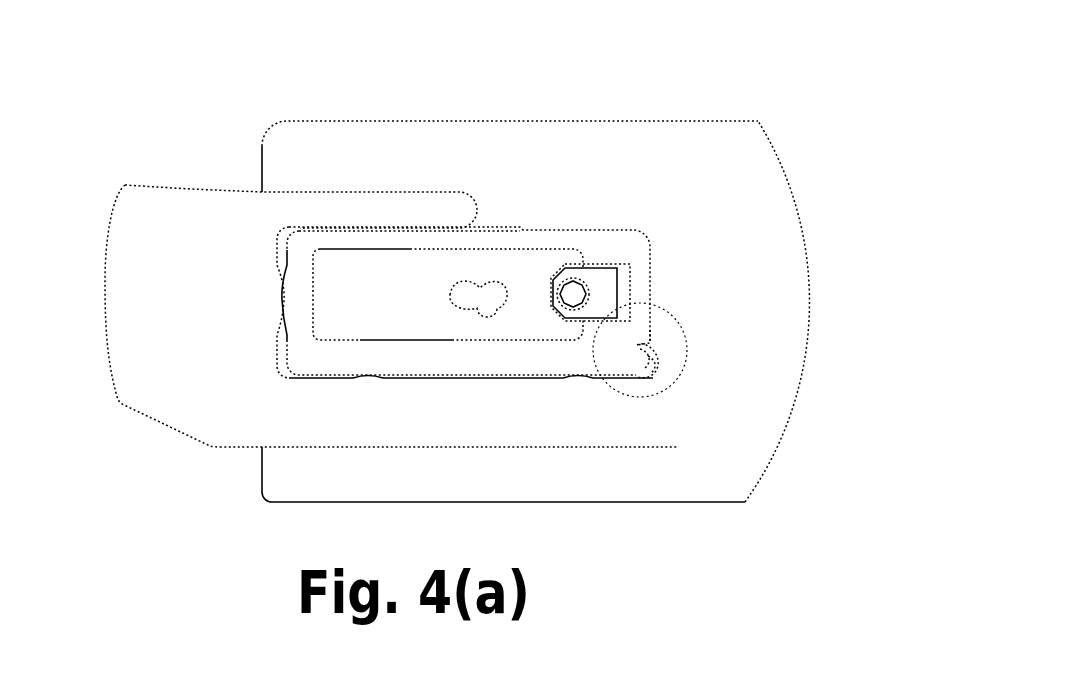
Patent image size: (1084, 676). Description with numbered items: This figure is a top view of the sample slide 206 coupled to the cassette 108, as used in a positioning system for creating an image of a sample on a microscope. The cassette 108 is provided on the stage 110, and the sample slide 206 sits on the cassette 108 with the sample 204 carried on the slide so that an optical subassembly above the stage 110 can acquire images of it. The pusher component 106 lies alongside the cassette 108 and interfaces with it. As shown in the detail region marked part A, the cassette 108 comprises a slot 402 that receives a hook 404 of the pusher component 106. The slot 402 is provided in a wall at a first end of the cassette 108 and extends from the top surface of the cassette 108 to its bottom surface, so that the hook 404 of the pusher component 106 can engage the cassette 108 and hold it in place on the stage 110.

The pusher component 106 is at (293, 202).
The cassette 108 is at (620, 238).
The stage 110 is at (715, 215).
The sample 204 is at (475, 290).
The sample slide 206 is at (358, 258).
The slot 402 is at (640, 340).
The hook 404 is at (667, 365).
The part A is at (638, 397).